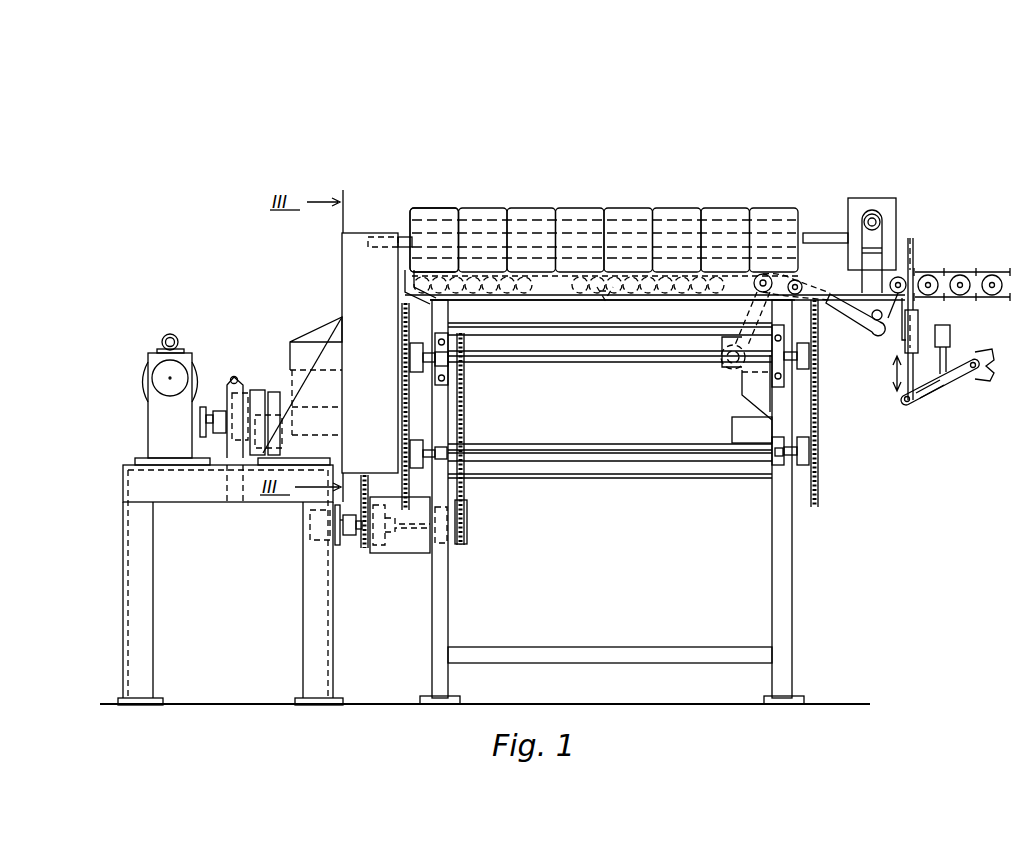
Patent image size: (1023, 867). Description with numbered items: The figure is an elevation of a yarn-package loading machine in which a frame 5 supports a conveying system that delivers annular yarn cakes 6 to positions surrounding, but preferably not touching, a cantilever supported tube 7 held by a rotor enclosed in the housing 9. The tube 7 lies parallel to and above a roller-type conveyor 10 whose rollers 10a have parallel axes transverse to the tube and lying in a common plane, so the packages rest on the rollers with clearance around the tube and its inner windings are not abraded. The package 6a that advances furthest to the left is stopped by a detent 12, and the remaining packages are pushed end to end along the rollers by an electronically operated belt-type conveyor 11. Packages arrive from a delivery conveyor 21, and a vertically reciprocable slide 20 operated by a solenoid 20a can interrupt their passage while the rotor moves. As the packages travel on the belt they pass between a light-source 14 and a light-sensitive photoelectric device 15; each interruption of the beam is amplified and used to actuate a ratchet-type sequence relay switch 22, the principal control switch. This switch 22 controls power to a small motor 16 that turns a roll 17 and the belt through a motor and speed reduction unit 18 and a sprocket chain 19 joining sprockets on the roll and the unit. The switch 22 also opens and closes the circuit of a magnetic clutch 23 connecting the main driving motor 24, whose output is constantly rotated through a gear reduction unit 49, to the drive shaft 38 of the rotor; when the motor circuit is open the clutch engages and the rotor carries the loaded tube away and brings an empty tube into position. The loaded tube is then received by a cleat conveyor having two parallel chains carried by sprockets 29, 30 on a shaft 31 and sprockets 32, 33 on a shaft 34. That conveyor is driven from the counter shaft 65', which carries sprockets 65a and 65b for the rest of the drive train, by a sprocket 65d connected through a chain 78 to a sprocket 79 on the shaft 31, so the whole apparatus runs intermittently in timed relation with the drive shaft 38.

The frame 5 is at (792, 562).
The yarn cakes 6 is at (566, 210).
The package 6a is at (434, 208).
The cantilever supported tube 7 is at (817, 233).
The housing 9 is at (341, 279).
The roller-type conveyor 10 is at (558, 306).
The rollers 10a is at (606, 298).
The belt-type conveyor 11 is at (851, 310).
The detent 12 is at (398, 279).
The light-source 14 is at (883, 236).
The light-sensitive photoelectric device 15 is at (870, 205).
The small motor 16 is at (752, 360).
The roll 17 is at (757, 283).
The motor and speed reduction unit 18 is at (722, 350).
The sprocket chain 19 is at (758, 312).
The vertically reciprocable slide 20 is at (928, 276).
The solenoid 20a is at (950, 336).
The conveyor 21 is at (972, 300).
The ratchet-type sequence relay switch 22 is at (732, 422).
The magnetic clutch 23 is at (258, 388).
The main driving motor 24 is at (201, 358).
The sprocket 29 is at (401, 384).
The sprocket 30 is at (820, 360).
The shaft 31 is at (546, 360).
The sprocket 32 is at (408, 454).
The sprocket 33 is at (812, 452).
The shaft 34 is at (596, 450).
The drive shaft 38 is at (282, 412).
The gear reduction unit 49 is at (156, 355).
The counter shaft 65' is at (350, 538).
The sprocket 65a is at (368, 549).
The sprocket 65b is at (342, 548).
The sprocket 65d is at (465, 546).
The chain 78 is at (467, 498).
The sprocket 79 is at (470, 366).